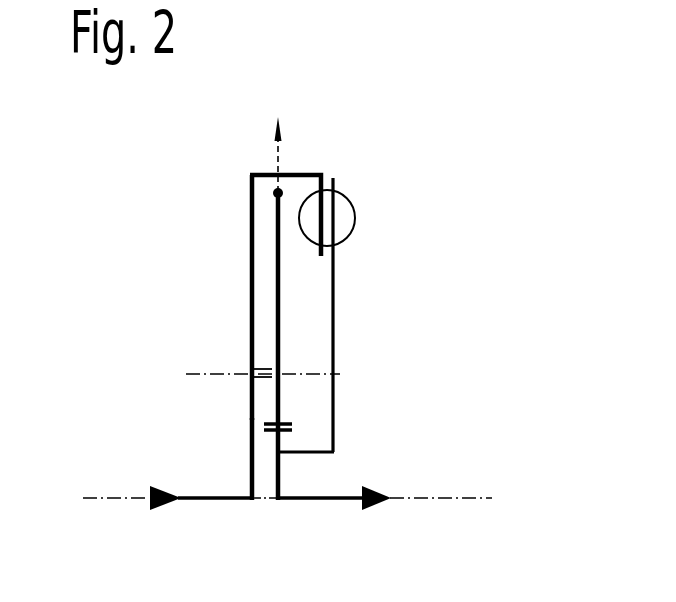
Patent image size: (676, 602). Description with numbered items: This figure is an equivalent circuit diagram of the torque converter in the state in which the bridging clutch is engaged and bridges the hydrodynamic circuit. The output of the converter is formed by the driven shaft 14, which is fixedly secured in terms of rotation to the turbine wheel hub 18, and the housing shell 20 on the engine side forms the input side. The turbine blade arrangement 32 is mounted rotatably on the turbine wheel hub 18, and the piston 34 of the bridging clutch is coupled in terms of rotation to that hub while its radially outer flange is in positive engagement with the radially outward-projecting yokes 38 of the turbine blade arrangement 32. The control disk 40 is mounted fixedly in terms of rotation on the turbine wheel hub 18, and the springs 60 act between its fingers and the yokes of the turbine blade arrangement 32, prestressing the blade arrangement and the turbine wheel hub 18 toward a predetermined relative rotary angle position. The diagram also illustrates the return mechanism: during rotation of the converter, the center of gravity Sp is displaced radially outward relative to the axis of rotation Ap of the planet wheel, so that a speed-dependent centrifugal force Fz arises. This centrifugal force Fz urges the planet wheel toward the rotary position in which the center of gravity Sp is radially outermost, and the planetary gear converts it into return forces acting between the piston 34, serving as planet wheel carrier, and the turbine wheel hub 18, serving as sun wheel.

The driven shaft 14 is at (307, 499).
The turbine wheel hub 18 is at (278, 475).
The housing shell 20 is at (250, 423).
The turbine blade arrangement 32 is at (322, 209).
The piston 34 is at (250, 248).
The yokes 38 is at (307, 174).
The control disk 40 is at (334, 305).
The springs 60 is at (355, 227).
The center of gravity Sp is at (276, 193).
The axis of rotation of the planet wheel Ap is at (203, 373).
The centrifugal force Fz is at (269, 153).